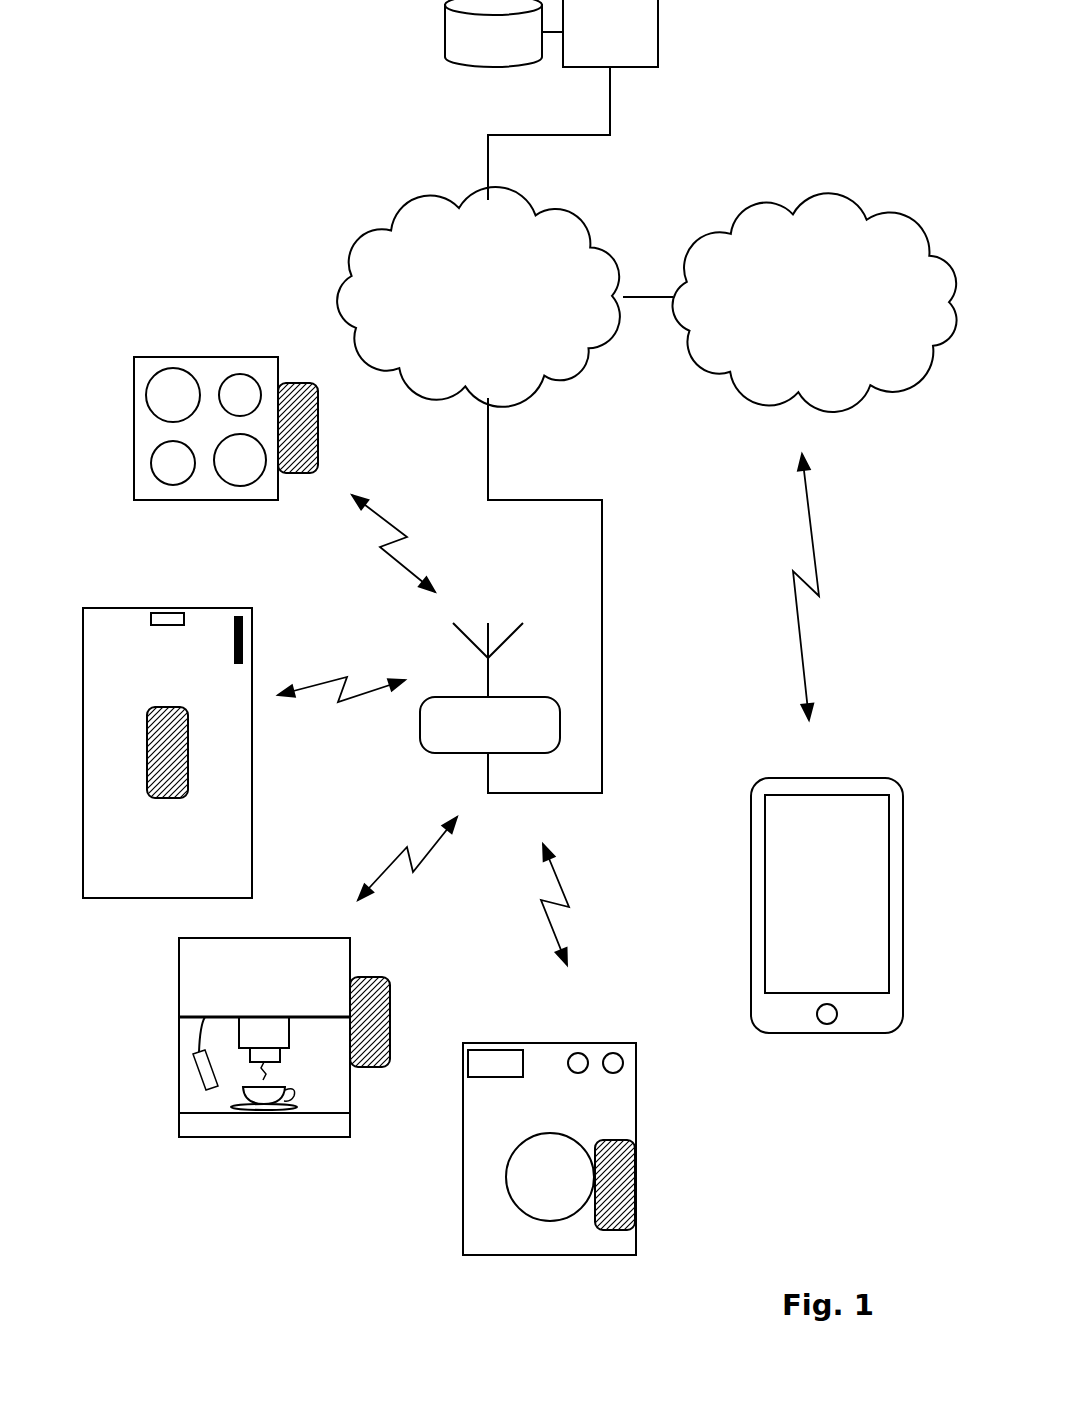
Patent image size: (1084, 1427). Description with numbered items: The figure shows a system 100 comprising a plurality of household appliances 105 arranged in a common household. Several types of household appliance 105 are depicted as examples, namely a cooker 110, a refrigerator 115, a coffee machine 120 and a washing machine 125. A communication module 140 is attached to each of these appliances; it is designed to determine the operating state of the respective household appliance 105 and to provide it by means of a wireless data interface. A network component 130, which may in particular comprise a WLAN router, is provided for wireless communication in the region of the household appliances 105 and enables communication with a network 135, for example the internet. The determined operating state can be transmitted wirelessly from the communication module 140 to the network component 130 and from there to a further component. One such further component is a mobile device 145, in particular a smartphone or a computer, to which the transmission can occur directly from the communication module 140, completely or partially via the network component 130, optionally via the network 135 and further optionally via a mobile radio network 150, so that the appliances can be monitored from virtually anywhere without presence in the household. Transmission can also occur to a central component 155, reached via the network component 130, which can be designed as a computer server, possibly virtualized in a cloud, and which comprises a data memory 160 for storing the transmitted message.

The system 100 is at (247, 88).
The household appliance 105 is at (170, 298).
The cooker 110 is at (134, 412).
The refrigerator 115 is at (127, 608).
The coffee machine 120 is at (179, 973).
The washing machine 125 is at (463, 1200).
The network component 130 is at (467, 743).
The network 135 is at (457, 313).
The communication module 140 is at (318, 427).
The mobile device 145 is at (800, 1033).
The mobile radio network 150 is at (796, 320).
The central component 155 is at (589, 50).
The data memory 160 is at (471, 53).